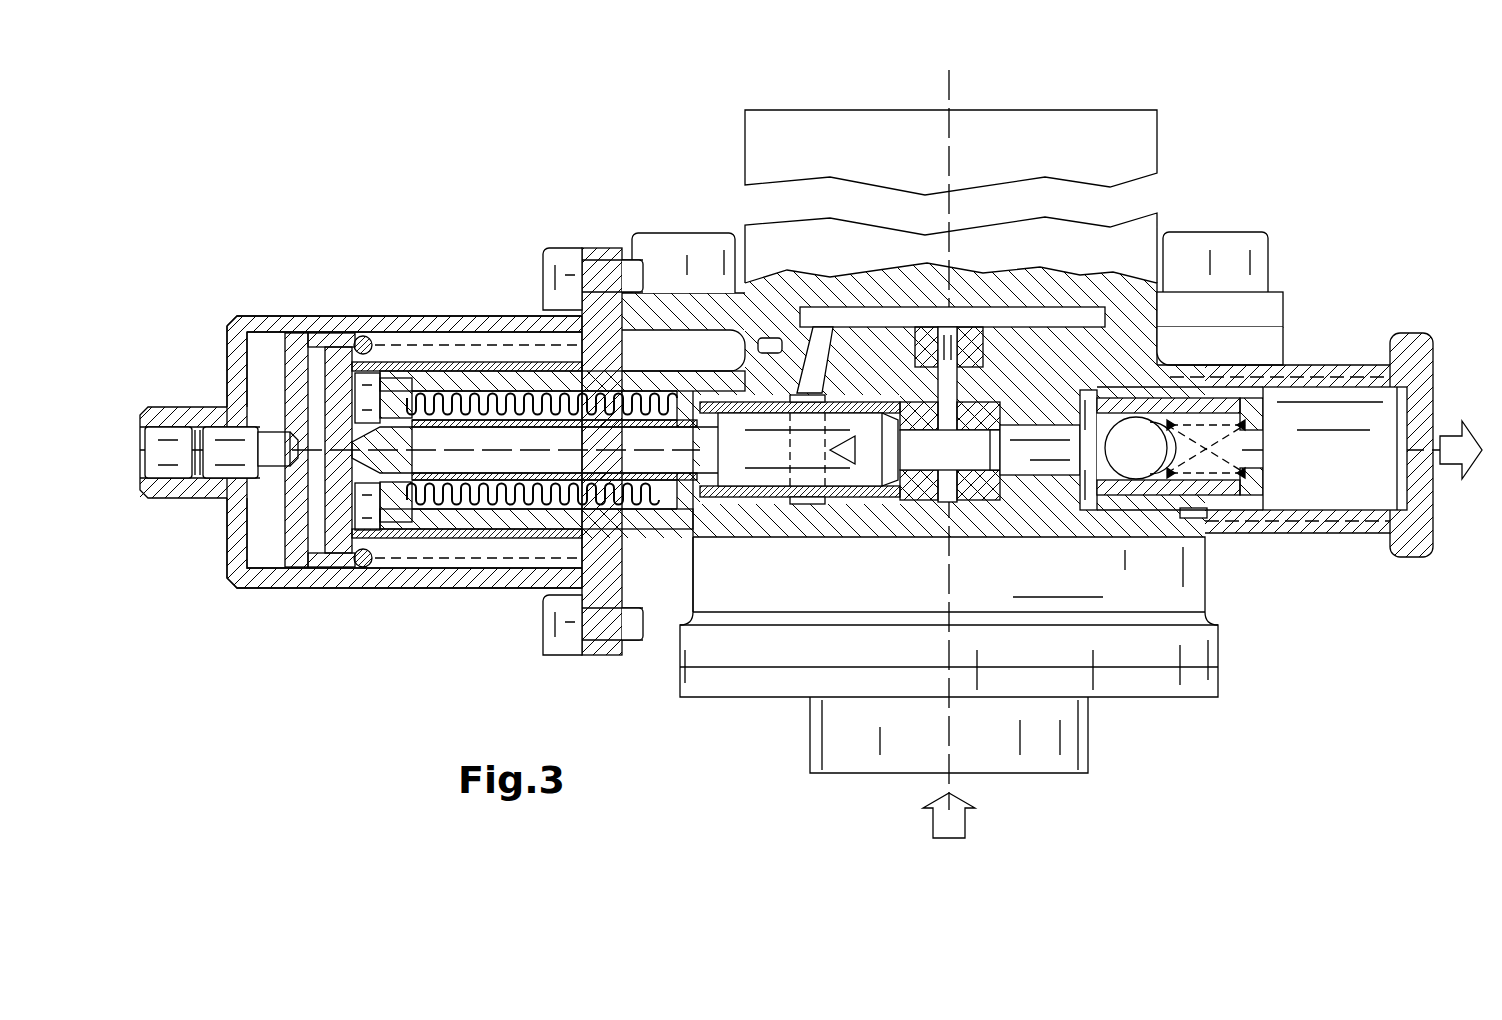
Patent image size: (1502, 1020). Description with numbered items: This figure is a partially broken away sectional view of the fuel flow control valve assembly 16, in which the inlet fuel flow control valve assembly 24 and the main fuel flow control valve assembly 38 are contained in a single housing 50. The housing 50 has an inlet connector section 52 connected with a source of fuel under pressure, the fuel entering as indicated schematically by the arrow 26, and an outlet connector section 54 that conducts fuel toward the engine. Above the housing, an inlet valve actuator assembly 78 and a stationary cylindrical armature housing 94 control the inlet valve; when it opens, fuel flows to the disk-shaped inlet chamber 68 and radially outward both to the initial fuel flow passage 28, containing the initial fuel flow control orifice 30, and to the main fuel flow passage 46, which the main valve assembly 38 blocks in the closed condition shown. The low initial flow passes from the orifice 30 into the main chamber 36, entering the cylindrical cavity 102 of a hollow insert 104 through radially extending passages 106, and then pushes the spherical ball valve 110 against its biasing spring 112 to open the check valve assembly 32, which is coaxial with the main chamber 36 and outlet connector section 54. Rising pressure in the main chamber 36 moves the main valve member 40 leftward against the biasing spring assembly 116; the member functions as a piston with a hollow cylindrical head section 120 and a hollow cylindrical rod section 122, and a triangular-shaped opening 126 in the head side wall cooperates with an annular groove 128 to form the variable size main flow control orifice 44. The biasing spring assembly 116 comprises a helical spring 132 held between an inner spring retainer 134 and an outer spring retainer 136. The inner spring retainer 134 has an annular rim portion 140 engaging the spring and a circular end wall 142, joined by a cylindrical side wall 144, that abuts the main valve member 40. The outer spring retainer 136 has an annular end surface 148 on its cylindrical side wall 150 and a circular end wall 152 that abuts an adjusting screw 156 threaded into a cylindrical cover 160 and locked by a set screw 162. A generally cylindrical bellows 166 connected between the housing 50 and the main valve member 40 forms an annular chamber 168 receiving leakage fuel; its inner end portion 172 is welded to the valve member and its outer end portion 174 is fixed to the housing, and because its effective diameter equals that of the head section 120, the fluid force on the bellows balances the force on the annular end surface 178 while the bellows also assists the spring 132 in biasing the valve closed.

The fuel flow control valve assembly 16 is at (1337, 136).
The inlet fuel flow control valve assembly 24 is at (1180, 214).
The arrow 26 is at (958, 825).
The initial fuel flow passage 28 is at (967, 360).
The initial fuel flow control orifice 30 is at (950, 363).
The check valve assembly 32 is at (1177, 375).
The main chamber 36 is at (905, 472).
The main fuel flow control valve assembly 38 is at (417, 690).
The main valve member 40 is at (765, 540).
The variable size main flow control orifice 44 is at (860, 465).
The main fuel flow passage 46 is at (803, 378).
The housing 50 is at (737, 700).
The inlet connector section 52 is at (868, 750).
The outlet connector section 54 is at (1330, 523).
The inlet chamber 68 is at (910, 318).
The inlet valve actuator assembly 78 is at (1160, 107).
The armature housing 94 is at (1126, 300).
The cylindrical cavity 102 is at (1035, 462).
The insert 104 is at (999, 492).
The radially extending passages 106 is at (878, 395).
The ball valve 110 is at (1207, 514).
The biasing spring 112 is at (1263, 450).
The biasing spring assembly 116 is at (330, 582).
The head section 120 is at (770, 497).
The rod section 122 is at (482, 508).
The triangular-shaped opening 126 is at (838, 470).
The annular groove 128 is at (753, 340).
The helical spring 132 is at (368, 338).
The inner spring retainer 134 is at (502, 357).
The outer spring retainer 136 is at (303, 328).
The annular rim portion 140 is at (622, 356).
The circular end wall 142 is at (343, 390).
The cylindrical side wall 144 is at (463, 362).
The annular end surface 148 is at (347, 390).
The cylindrical side wall 150 is at (327, 560).
The circular end wall 152 is at (295, 512).
The adjusting screw 156 is at (228, 436).
The cylindrical cover 160 is at (417, 582).
The set screw 162 is at (173, 438).
The bellows 166 is at (658, 512).
The annular chamber 168 is at (518, 510).
The inner end portion 172 is at (680, 477).
The outer end portion 174 is at (418, 452).
The annular end surface 178 is at (709, 505).